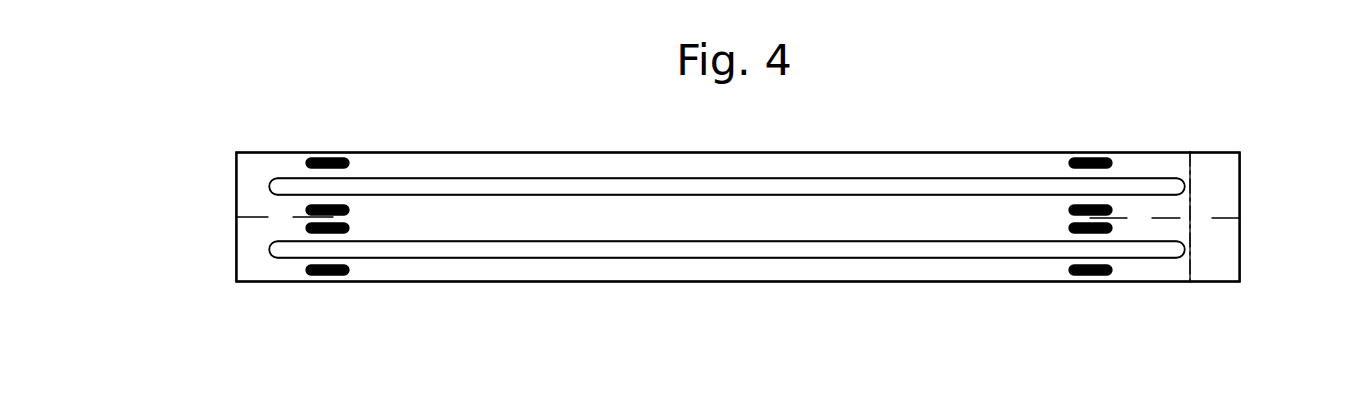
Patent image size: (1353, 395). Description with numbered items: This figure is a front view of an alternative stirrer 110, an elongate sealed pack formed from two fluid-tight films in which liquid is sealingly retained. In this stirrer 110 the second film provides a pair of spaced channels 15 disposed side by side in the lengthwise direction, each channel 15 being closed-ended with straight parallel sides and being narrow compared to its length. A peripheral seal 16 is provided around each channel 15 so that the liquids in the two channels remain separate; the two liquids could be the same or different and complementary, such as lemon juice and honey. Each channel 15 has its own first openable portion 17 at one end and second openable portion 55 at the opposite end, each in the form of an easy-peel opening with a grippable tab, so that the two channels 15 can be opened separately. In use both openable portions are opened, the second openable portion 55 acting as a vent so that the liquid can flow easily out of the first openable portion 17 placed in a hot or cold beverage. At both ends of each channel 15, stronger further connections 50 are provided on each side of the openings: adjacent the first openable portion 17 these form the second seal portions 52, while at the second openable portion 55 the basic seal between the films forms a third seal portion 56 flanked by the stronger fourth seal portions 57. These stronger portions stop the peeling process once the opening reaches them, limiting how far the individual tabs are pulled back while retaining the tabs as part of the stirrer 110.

The channel 15 is at (573, 247).
The sealed joint 16 is at (840, 163).
The first openable portion 17 is at (245, 300).
The further connection 50 is at (272, 134).
The second seal portion 52 is at (341, 208).
The second openable portion 55 is at (1228, 306).
The third seal portion 56 is at (1222, 185).
The fourth seal portion 57 is at (1108, 210).
The stirrer 110 is at (998, 120).